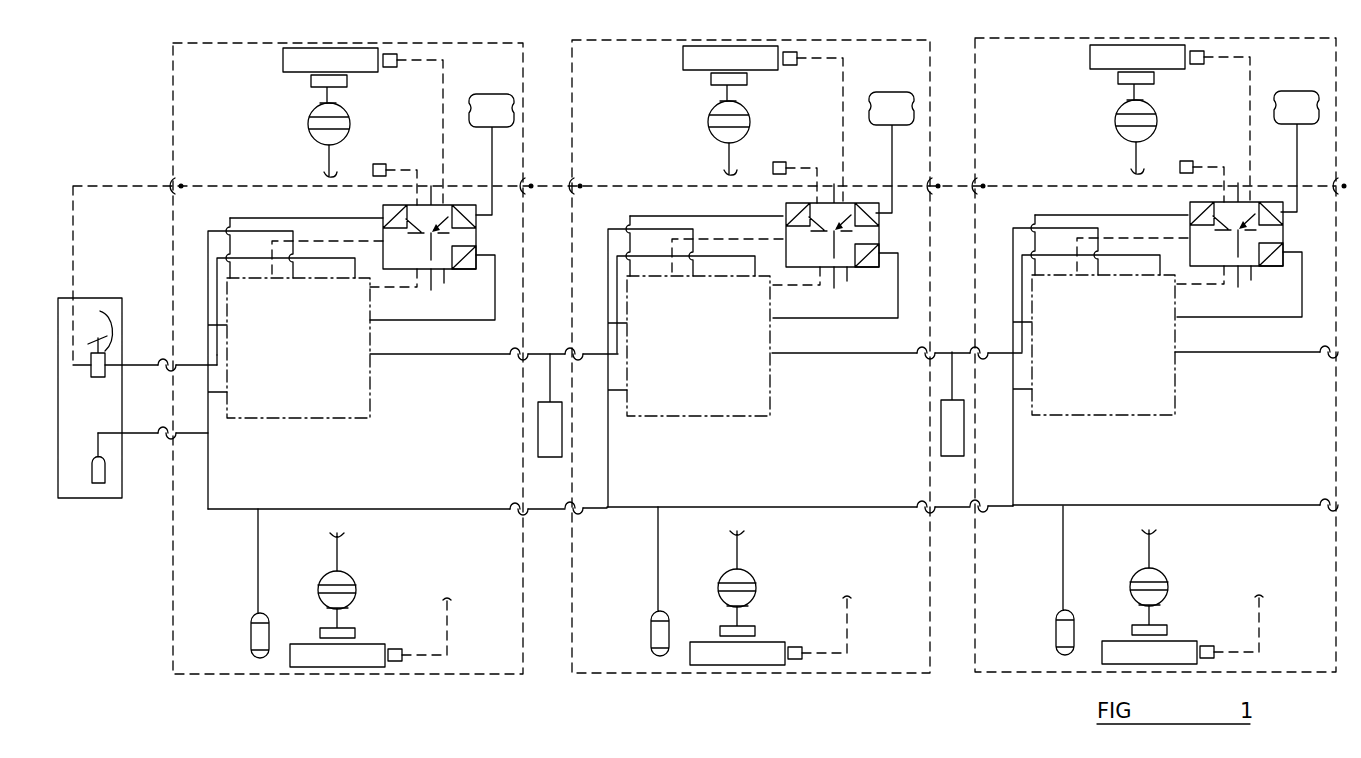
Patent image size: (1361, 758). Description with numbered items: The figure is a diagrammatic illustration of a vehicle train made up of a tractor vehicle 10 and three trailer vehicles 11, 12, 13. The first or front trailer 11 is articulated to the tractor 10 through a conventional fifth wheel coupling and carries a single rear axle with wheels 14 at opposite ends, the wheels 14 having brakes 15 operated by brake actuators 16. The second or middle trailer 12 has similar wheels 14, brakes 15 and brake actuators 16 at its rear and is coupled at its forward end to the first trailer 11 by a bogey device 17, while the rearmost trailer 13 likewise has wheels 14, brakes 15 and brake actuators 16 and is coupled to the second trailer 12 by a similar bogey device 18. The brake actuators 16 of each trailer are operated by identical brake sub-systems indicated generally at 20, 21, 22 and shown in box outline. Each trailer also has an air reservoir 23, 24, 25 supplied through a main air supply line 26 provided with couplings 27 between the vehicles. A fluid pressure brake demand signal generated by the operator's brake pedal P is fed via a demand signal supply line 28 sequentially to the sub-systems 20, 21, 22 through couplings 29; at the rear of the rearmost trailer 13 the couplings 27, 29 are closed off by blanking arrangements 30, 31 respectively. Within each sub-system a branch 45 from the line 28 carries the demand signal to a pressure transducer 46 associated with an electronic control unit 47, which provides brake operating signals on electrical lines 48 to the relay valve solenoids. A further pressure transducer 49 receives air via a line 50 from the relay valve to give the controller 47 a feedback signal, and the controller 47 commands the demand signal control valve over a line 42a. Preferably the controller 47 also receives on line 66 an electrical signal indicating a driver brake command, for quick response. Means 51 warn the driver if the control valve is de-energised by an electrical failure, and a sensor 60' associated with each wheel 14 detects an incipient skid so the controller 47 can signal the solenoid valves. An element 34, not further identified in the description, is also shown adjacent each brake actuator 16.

The tractor vehicle 10 is at (88, 254).
The first trailer 11 is at (469, 38).
The second trailer 12 is at (844, 38).
The third trailer 13 is at (1209, 38).
The wheels 14 is at (365, 58).
The brakes 15 is at (311, 80).
The brake actuator 16 is at (309, 120).
The bogey device 17 is at (550, 349).
The bogey device 18 is at (952, 347).
The brake sub-system 20 is at (527, 58).
The brake sub-system 21 is at (935, 57).
The brake sub-system 22 is at (1310, 57).
The air reservoir 23 is at (251, 637).
The air reservoir 24 is at (652, 635).
The air reservoir 25 is at (1056, 635).
The main air supply line 26 is at (198, 446).
The couplings 27 is at (162, 447).
The demand signal supply line 28 is at (145, 358).
The couplings 29 is at (185, 358).
The blanking arrangement 30 is at (1332, 502).
The blanking arrangement 31 is at (1332, 352).
The sensor probe 34 is at (333, 165).
The line 42a is at (306, 232).
The branch 45 is at (313, 216).
The pressure transducer 46 is at (399, 233).
The electronic control unit 47 is at (444, 283).
The electrical lines 48 is at (396, 289).
The further pressure transducer 49 is at (466, 270).
The line 50 is at (462, 324).
The warning means 51 is at (385, 164).
The sensor 60' is at (825, 356).
The line 66 is at (106, 185).